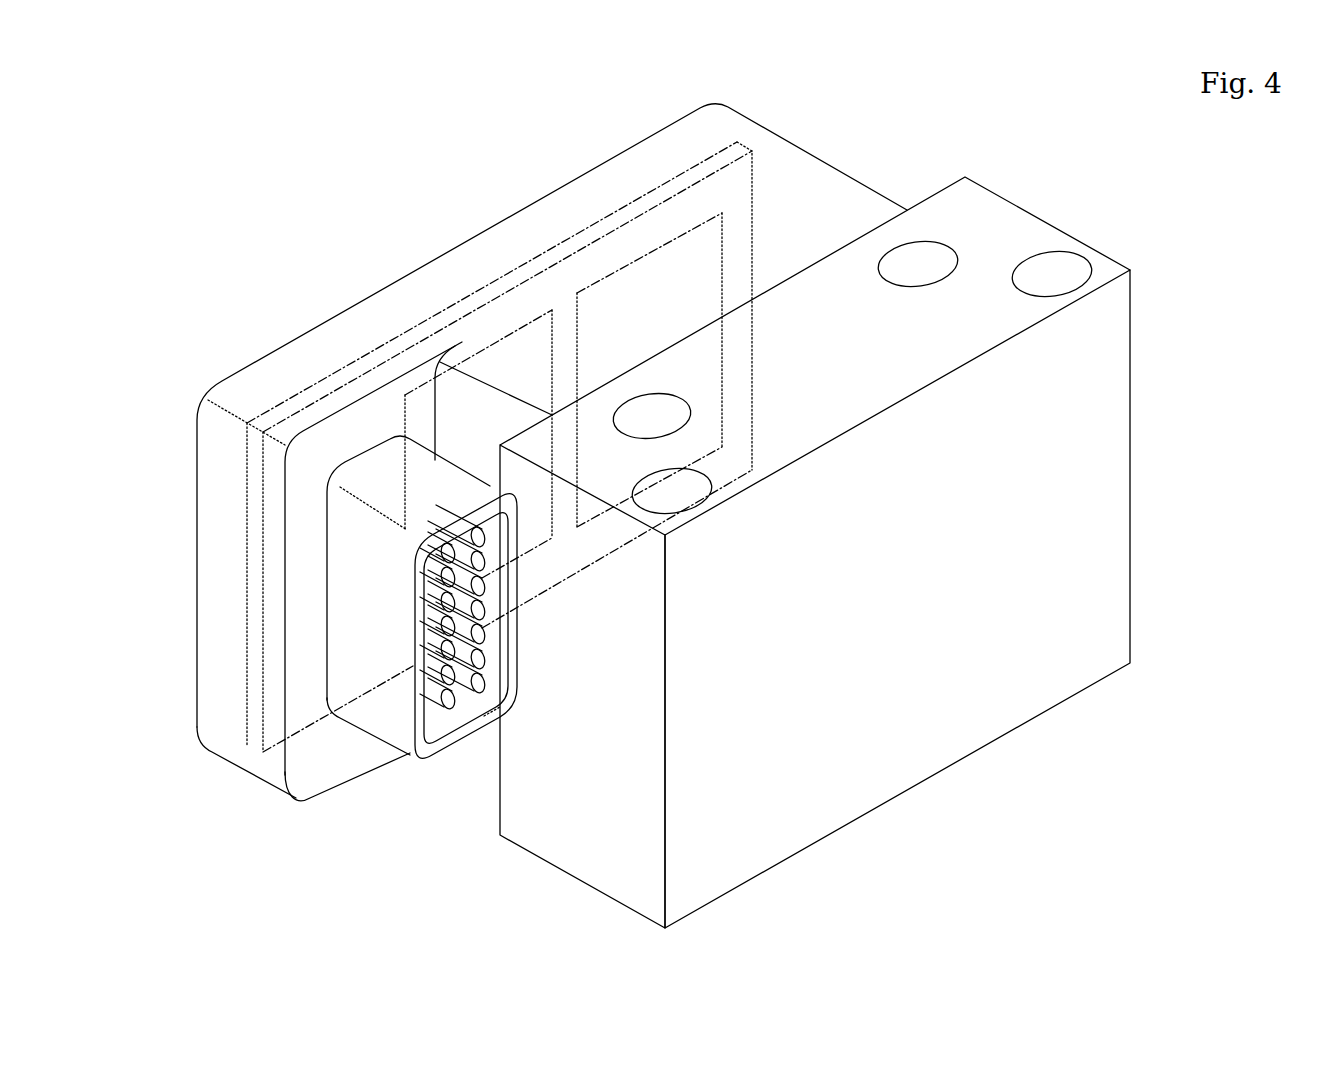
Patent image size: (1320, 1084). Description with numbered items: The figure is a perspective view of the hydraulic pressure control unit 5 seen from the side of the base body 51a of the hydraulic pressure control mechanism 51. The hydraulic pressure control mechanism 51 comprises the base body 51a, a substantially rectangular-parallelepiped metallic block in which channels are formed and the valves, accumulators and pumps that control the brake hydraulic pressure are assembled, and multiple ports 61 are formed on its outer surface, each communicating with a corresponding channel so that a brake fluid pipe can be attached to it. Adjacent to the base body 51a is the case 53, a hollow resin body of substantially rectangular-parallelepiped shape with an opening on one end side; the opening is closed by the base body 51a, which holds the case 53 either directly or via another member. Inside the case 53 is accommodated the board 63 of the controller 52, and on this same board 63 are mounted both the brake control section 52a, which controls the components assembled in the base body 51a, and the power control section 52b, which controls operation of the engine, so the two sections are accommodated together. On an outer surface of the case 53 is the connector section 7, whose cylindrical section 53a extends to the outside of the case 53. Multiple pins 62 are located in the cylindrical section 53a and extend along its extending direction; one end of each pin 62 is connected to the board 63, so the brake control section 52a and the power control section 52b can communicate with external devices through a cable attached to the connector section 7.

The hydraulic pressure control unit 5 is at (145, 147).
The connector section 7 is at (422, 679).
The hydraulic pressure control mechanism 51 is at (856, 552).
The base body 51a is at (1098, 497).
The controller 52 is at (552, 408).
The brake control section 52a is at (648, 268).
The power control section 52b is at (478, 360).
The case 53 is at (210, 816).
The cylindrical section 53a is at (372, 710).
The ports 61 is at (677, 415).
The pins 62 is at (468, 688).
The board 63 is at (710, 197).